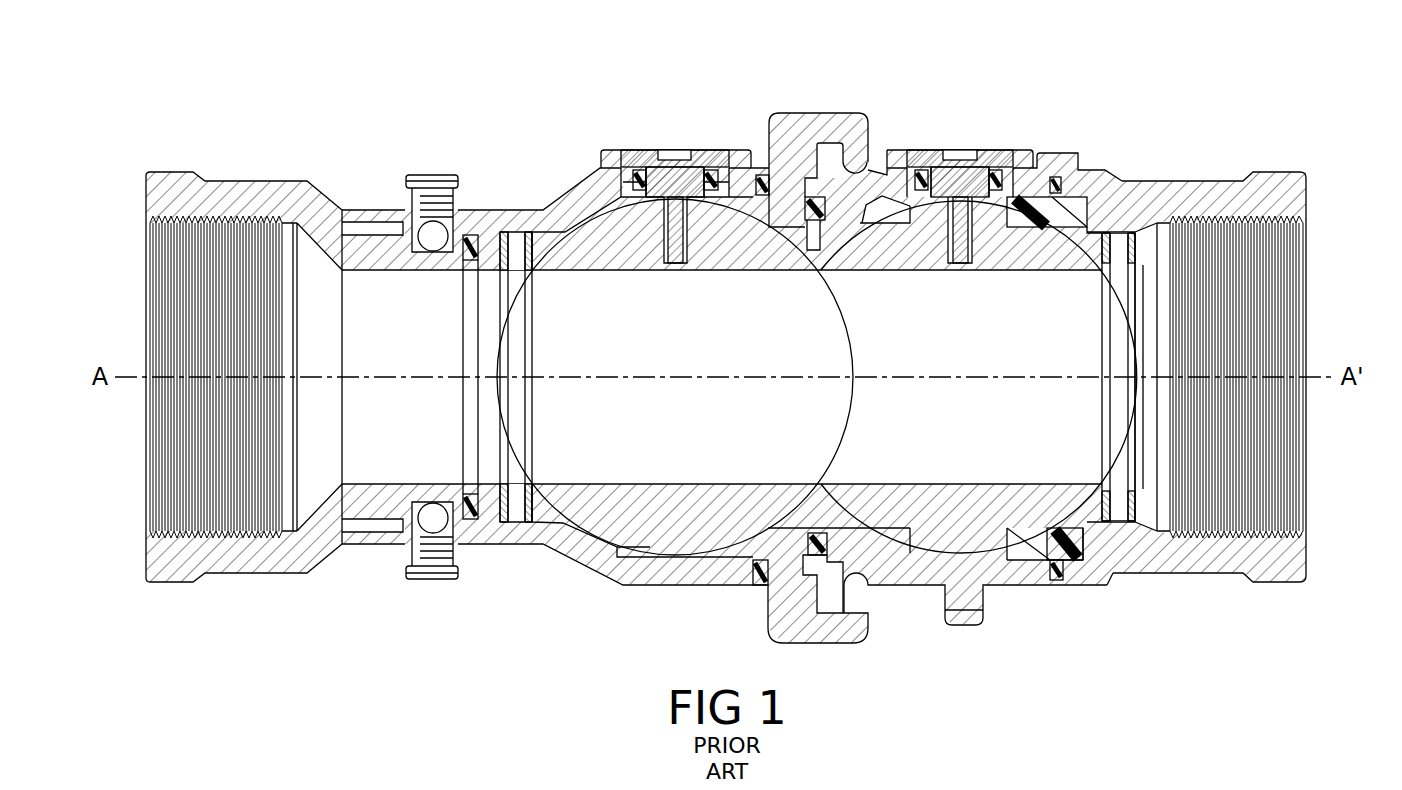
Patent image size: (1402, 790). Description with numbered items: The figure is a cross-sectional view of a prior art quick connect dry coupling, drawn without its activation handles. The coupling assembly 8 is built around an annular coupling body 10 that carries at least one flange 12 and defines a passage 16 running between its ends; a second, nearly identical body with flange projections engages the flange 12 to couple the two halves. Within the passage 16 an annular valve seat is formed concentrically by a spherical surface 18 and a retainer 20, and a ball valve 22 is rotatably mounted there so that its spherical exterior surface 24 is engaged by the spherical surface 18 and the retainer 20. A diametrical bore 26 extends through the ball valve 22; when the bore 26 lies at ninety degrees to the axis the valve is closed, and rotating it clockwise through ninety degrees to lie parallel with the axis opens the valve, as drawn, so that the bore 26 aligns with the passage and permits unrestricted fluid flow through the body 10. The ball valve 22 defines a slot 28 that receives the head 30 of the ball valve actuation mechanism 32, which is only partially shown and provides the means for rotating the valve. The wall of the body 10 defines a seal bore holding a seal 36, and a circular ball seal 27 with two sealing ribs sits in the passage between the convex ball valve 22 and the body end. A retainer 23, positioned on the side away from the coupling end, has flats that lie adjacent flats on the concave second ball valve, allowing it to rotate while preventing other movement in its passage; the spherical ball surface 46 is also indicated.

The coupling assembly 8 is at (908, 78).
The annular coupling body 10 is at (600, 562).
The flange 12 is at (860, 598).
The passage 16 is at (146, 238).
The spherical surface 18 is at (560, 232).
The retainer 20 is at (548, 544).
The ball valve 22 is at (662, 434).
The retainer 23 is at (1060, 215).
The spherical exterior surface 24 is at (543, 233).
The diametrical bore 26 is at (565, 480).
The ball seal 27 is at (797, 236).
The slot 28 is at (660, 238).
The head 30 is at (678, 262).
The ball valve actuation mechanism 32 is at (620, 158).
The seal 36 is at (716, 197).
The ball spherical surface 46 is at (855, 400).